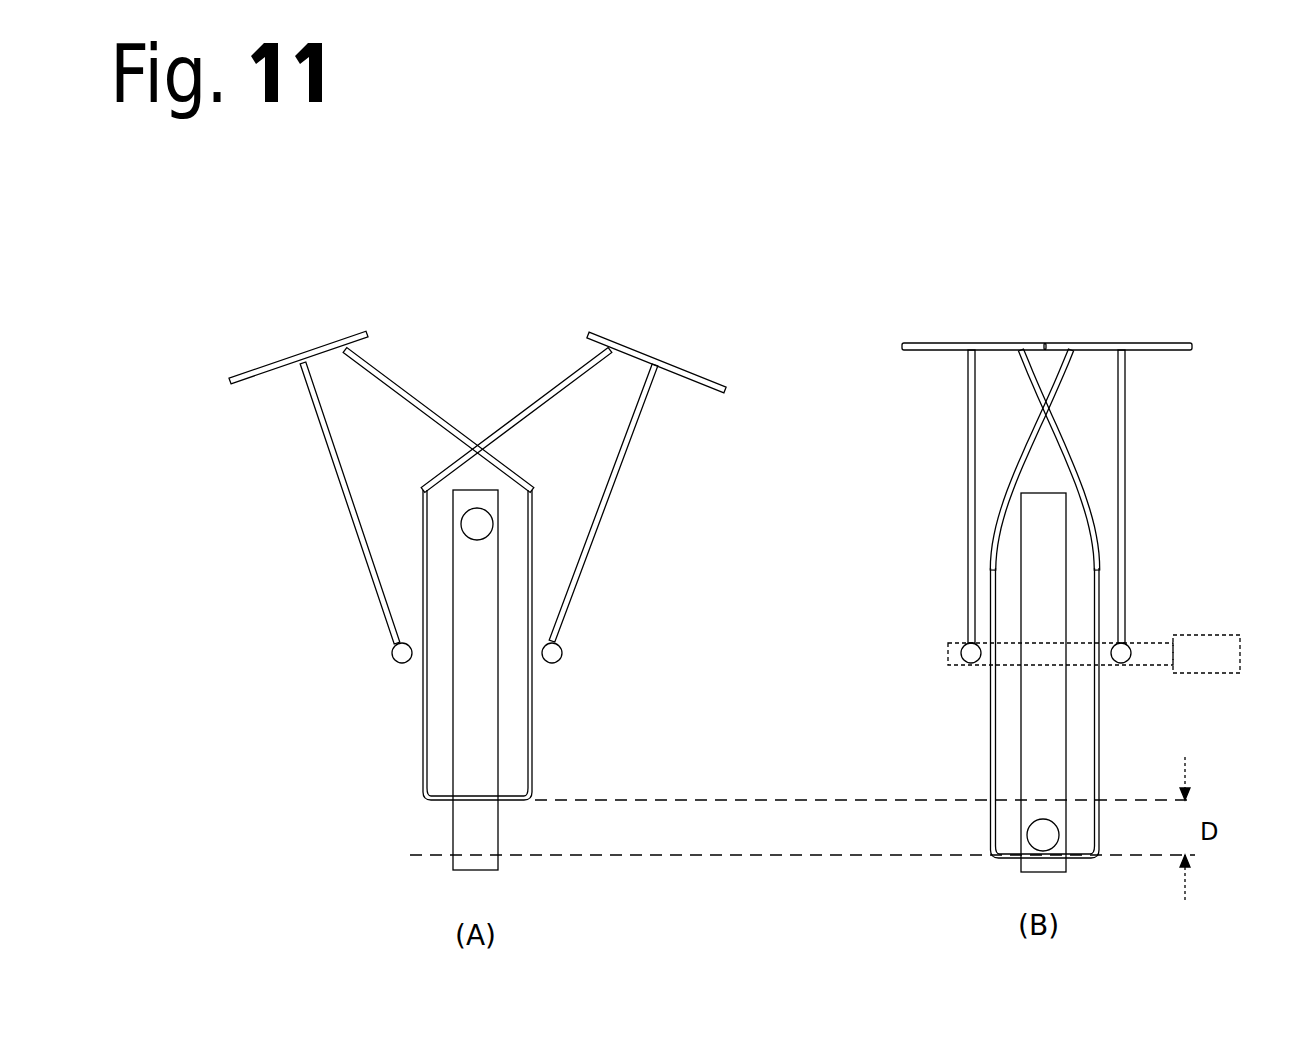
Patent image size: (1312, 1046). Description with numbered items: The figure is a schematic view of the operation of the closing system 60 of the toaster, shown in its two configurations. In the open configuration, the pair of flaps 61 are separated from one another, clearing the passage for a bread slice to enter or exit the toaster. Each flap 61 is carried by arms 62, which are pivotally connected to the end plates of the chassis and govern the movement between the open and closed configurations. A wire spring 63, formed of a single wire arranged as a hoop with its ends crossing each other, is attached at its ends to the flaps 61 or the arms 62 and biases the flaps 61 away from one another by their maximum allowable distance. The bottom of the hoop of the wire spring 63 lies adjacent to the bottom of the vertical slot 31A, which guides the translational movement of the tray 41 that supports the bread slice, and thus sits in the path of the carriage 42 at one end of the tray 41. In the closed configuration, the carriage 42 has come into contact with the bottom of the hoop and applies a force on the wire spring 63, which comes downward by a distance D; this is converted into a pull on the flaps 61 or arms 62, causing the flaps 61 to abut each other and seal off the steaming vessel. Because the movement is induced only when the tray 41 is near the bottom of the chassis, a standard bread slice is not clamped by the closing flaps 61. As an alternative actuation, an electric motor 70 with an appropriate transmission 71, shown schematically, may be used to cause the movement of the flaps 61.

The closing system 60 is at (411, 311).
The flaps 61 is at (310, 350).
The arms 62 is at (345, 516).
The wire spring 63 is at (430, 398).
The vertical slot 31A is at (487, 740).
The tray 41 is at (844, 635).
The carriage 42 is at (480, 520).
The electric motor 70 is at (1238, 655).
The transmission 71 is at (958, 662).